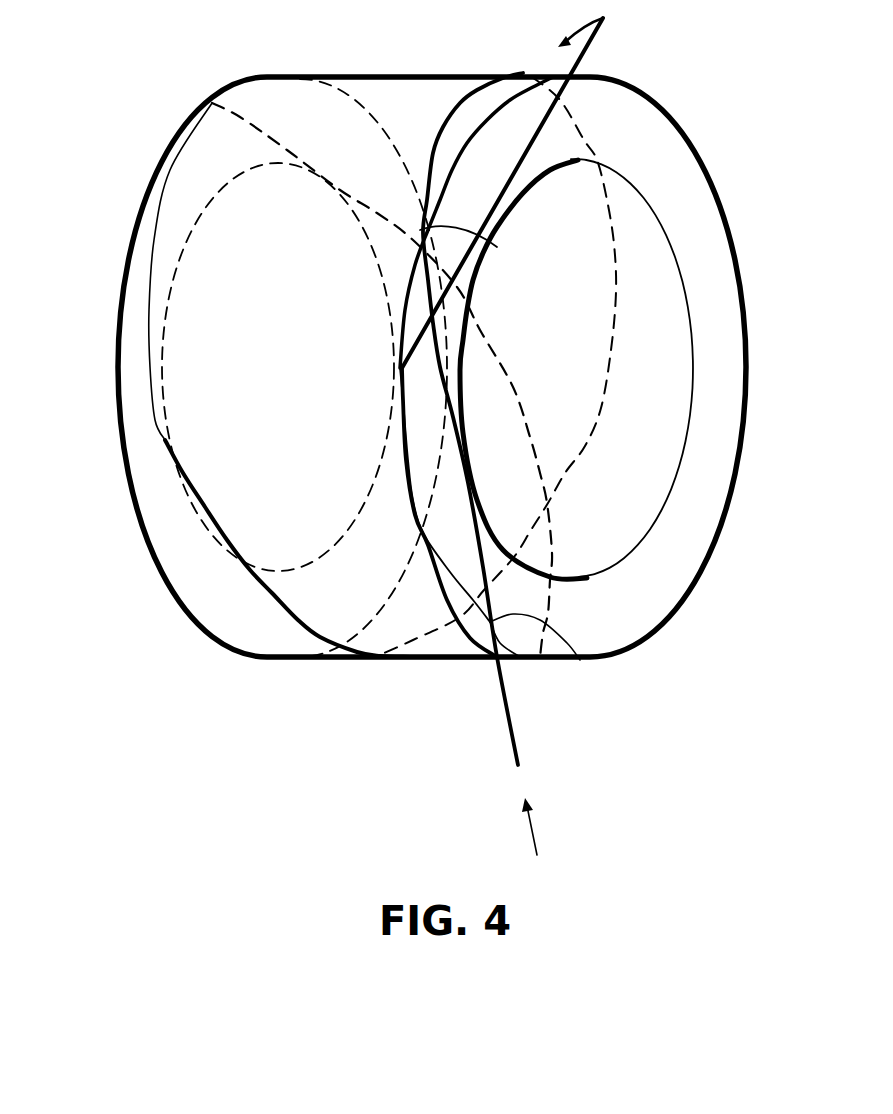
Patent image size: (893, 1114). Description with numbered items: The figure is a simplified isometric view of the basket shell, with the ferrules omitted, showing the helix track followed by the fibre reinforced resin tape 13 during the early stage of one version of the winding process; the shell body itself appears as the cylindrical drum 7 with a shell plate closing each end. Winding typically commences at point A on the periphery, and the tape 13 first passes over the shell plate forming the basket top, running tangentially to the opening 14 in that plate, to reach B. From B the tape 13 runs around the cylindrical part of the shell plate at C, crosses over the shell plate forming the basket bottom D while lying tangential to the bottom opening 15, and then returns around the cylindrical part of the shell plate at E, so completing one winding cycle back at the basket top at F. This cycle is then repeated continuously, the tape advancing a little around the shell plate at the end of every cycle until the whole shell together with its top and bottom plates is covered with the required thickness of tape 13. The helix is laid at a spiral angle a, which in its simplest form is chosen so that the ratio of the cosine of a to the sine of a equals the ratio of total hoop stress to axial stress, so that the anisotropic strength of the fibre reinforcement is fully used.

The ring-shaped workpiece (cylindrical ring) 7 is at (373, 77).
The fibre reinforced resin tape 13 is at (287, 612).
The opening 14 is at (692, 397).
The opening 15 is at (190, 233).
The spiral angle a is at (177, 307).
The winding start point A is at (579, 658).
The point B is at (497, 247).
The cylindrical shell plate track C is at (460, 103).
The basket bottom D is at (212, 103).
The cylindrical shell plate track E is at (608, 350).
The basket top F is at (402, 368).